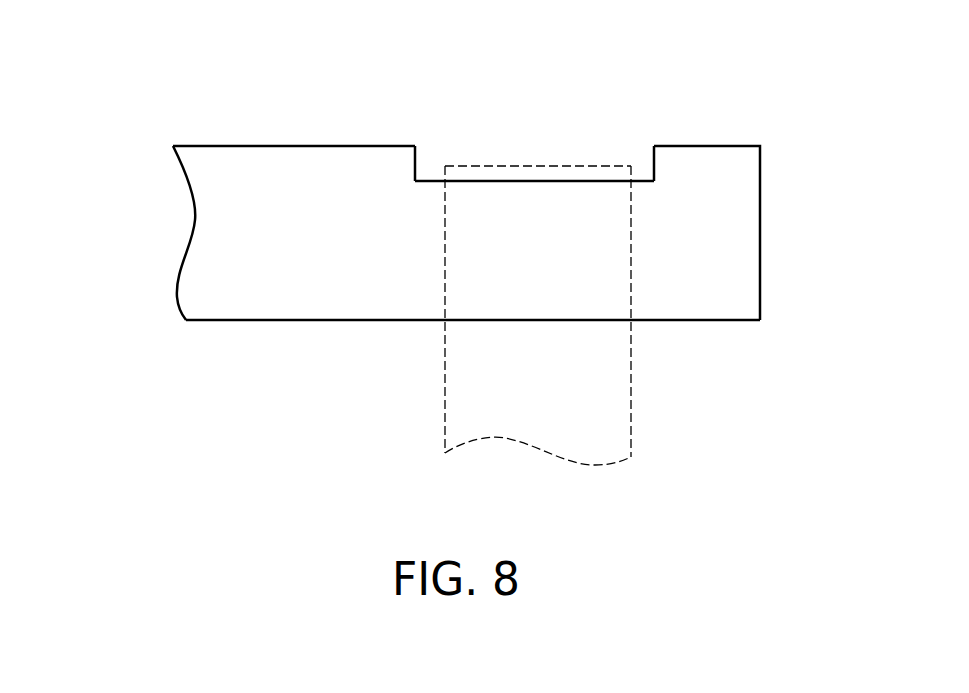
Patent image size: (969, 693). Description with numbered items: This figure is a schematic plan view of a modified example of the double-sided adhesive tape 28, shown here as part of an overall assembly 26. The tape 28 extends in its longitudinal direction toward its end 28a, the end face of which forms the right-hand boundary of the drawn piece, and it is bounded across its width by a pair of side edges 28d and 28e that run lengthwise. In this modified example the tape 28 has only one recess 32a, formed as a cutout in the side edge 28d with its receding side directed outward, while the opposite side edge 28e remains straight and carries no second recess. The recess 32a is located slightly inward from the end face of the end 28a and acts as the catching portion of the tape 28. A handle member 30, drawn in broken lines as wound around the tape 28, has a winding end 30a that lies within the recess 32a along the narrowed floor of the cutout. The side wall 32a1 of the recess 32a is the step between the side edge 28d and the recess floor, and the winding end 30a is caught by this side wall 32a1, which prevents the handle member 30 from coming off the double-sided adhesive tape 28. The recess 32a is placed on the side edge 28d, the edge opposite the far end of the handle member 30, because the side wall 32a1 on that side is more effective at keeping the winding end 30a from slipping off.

The joint structure 26 is at (122, 64).
The double-sided adhesive tape 28 is at (247, 299).
The end 28a is at (743, 235).
The side edge 28d is at (257, 145).
The side edge 28e is at (330, 320).
The handle member 30 is at (633, 368).
The winding end 30a is at (572, 163).
The recess 32a is at (495, 178).
The side wall 32a1 is at (419, 168).